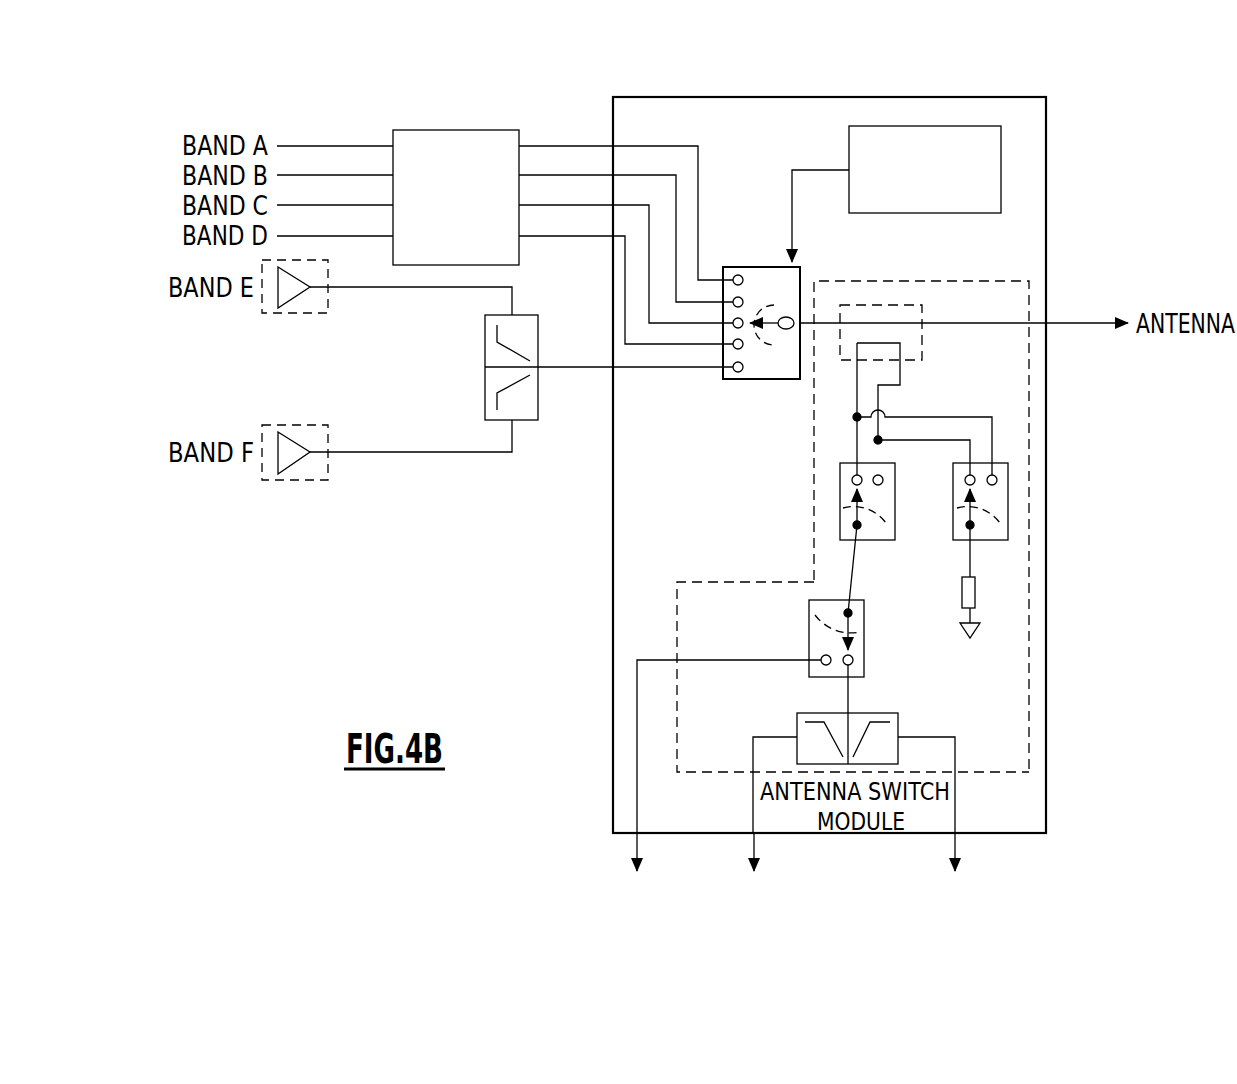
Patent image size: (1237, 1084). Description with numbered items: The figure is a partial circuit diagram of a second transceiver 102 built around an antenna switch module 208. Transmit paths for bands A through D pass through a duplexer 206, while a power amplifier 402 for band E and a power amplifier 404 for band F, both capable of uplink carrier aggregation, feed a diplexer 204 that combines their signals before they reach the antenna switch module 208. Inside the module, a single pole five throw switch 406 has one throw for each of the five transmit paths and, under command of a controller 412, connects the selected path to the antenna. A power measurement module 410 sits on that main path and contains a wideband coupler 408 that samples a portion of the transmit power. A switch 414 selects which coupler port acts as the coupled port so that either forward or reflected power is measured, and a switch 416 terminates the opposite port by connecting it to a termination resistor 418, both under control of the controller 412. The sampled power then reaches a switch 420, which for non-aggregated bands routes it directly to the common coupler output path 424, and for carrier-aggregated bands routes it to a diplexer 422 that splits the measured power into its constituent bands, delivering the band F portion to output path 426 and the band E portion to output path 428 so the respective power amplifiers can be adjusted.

The transceiver 102 is at (1132, 120).
The diplexer 204 is at (525, 428).
The duplexer 206 is at (462, 128).
The antenna switch module 208 is at (808, 96).
The power amplifier 402 is at (287, 320).
The power amplifier 404 is at (287, 488).
The switch 406 is at (715, 260).
The coupler 408 is at (915, 296).
The power measurement module 410 is at (722, 576).
The controller 412 is at (957, 123).
The switch 414 is at (898, 512).
The switch 416 is at (1012, 509).
The termination resistor 418 is at (960, 594).
The switch 420 is at (868, 645).
The diplexer 422 is at (902, 721).
The output path 424 is at (622, 857).
The output path 426 is at (748, 845).
The output path 428 is at (950, 845).